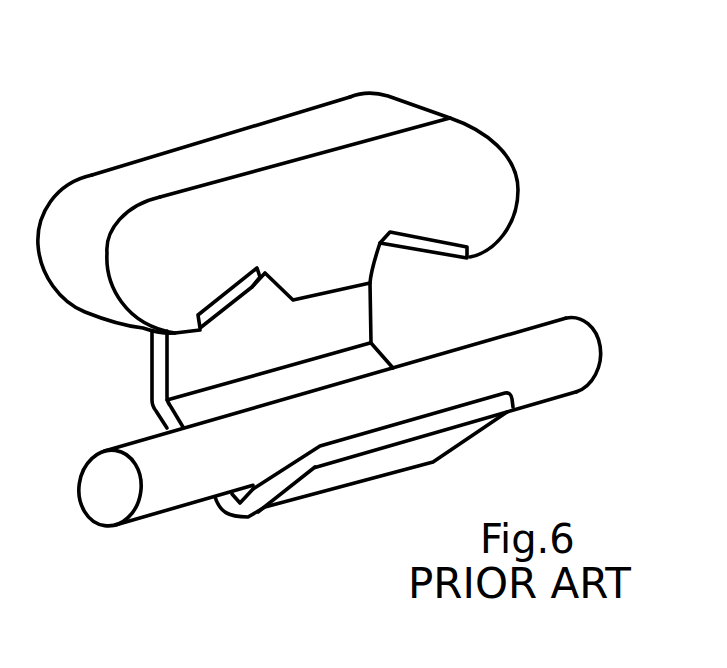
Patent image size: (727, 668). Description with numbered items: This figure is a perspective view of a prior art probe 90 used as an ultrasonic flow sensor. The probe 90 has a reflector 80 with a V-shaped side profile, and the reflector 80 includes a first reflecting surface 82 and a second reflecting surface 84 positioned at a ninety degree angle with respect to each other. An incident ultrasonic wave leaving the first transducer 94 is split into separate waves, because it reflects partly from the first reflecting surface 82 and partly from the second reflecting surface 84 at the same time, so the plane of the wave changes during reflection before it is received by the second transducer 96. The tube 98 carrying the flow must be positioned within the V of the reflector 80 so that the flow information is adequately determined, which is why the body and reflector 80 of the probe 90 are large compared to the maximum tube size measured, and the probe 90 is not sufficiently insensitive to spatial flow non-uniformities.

The prior art probe 90 is at (192, 60).
The first transducer 94 is at (227, 285).
The second transducer 96 is at (425, 253).
The reflector 80 is at (226, 335).
The first reflecting surface 82 is at (185, 408).
The second reflecting surface 84 is at (290, 462).
The tube 98 is at (138, 527).